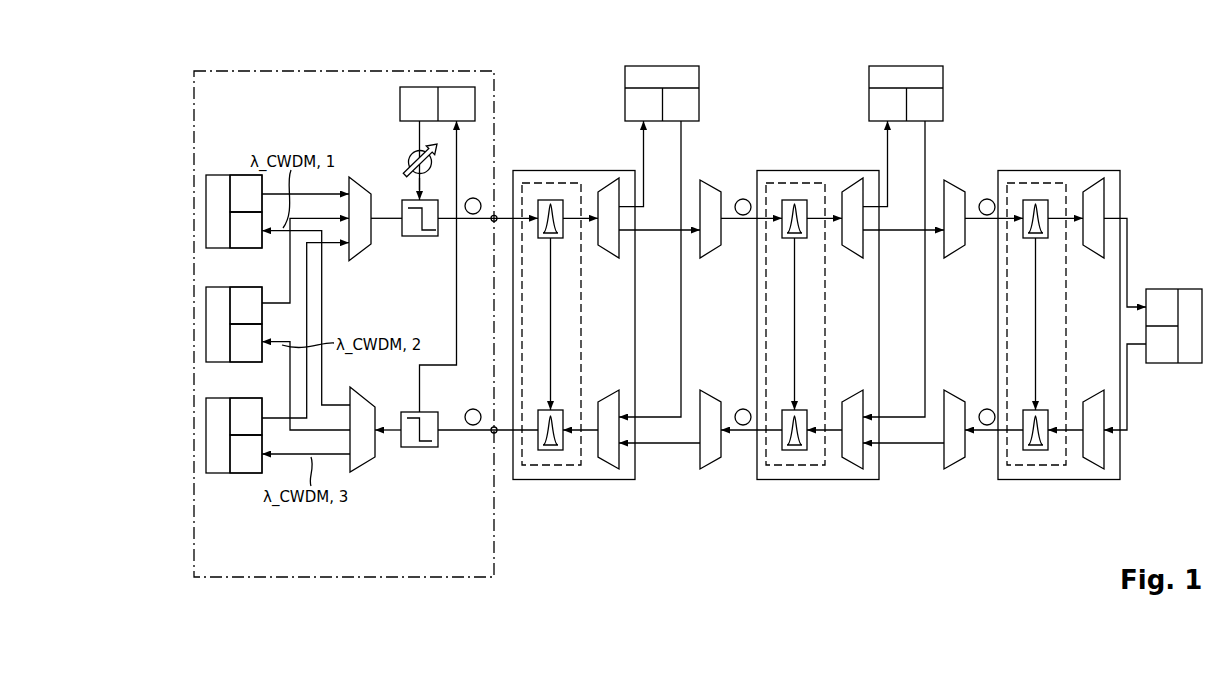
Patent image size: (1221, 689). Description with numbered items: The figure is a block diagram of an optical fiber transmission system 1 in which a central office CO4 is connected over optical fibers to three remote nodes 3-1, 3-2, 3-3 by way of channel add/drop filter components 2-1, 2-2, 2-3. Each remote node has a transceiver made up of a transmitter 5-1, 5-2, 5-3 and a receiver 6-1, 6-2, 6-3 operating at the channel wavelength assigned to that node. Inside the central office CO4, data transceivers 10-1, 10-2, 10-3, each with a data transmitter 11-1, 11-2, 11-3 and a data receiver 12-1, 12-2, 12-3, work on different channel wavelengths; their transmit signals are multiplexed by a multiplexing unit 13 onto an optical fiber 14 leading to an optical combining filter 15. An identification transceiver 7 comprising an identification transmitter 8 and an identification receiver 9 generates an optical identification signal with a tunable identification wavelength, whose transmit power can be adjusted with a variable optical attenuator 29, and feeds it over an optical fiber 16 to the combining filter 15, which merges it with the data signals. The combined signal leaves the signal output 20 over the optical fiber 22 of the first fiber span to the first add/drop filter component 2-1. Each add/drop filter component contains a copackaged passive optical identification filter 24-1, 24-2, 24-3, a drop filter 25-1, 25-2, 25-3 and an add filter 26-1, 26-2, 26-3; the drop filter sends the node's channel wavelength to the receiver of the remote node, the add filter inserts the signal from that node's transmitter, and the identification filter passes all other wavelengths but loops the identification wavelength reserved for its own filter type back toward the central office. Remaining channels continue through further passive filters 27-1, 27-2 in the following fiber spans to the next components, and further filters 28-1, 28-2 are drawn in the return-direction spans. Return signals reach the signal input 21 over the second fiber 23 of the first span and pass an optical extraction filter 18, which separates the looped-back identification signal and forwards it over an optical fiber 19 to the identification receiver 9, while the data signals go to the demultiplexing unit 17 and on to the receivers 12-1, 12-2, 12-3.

The optical fiber transmission system 1 is at (1068, 64).
The central office CO4 is at (258, 70).
The first add/drop filter component 2-1 is at (574, 338).
The second add/drop filter component 2-2 is at (818, 338).
The third add/drop filter component 2-3 is at (1059, 338).
The first remote node 3-1 is at (662, 216).
The second remote node 3-2 is at (906, 216).
The third remote node 3-3 is at (1154, 324).
The transmitter 5-1 is at (699, 93).
The transmitter 5-2 is at (943, 93).
The transmitter 5-3 is at (1153, 363).
The receiver 6-1 is at (625, 93).
The receiver 6-2 is at (869, 93).
The receiver 6-3 is at (1151, 289).
The identification transceiver 7 is at (437, 79).
The identification transmitter 8 is at (410, 88).
The identification receiver 9 is at (470, 88).
The data transceiver 10-1 is at (201, 190).
The data transceiver 10-2 is at (258, 317).
The data transceiver 10-3 is at (201, 453).
The data transmitter 11-1 is at (240, 175).
The data transmitter 11-2 is at (243, 287).
The data transmitter 11-3 is at (243, 398).
The data receiver 12-1 is at (246, 249).
The data receiver 12-2 is at (265, 331).
The data receiver 12-3 is at (243, 474).
The multiplexing unit 13 is at (362, 257).
The optical fiber 14 is at (386, 217).
The optical combining filter 15 is at (416, 237).
The optical fiber 16 is at (432, 170).
The demultiplexing unit 17 is at (361, 472).
The optical extraction filter 18 is at (406, 411).
The optical fiber 19 is at (457, 143).
The signal output 20 is at (467, 214).
The signal input 21 is at (493, 428).
The optical fiber 22 is at (494, 222).
The second fiber 23 is at (496, 436).
The passive optical identification filter 24-1 is at (527, 465).
The passive optical identification filter 24-2 is at (771, 465).
The passive optical identification filter 24-3 is at (1012, 465).
The drop filter 25-1 is at (610, 178).
The drop filter 25-2 is at (854, 178).
The drop filter 25-3 is at (1090, 178).
The add filter 26-1 is at (606, 469).
The add filter 26-2 is at (850, 469).
The add filter 26-3 is at (1090, 469).
The optical filter 27-1 is at (710, 180).
The optical passive filter 27-2 is at (954, 180).
The upstream pass filter 1 28-1 is at (708, 469).
The upstream pass filter 2 28-2 is at (952, 469).
The variable optical attenuator 29 is at (407, 160).